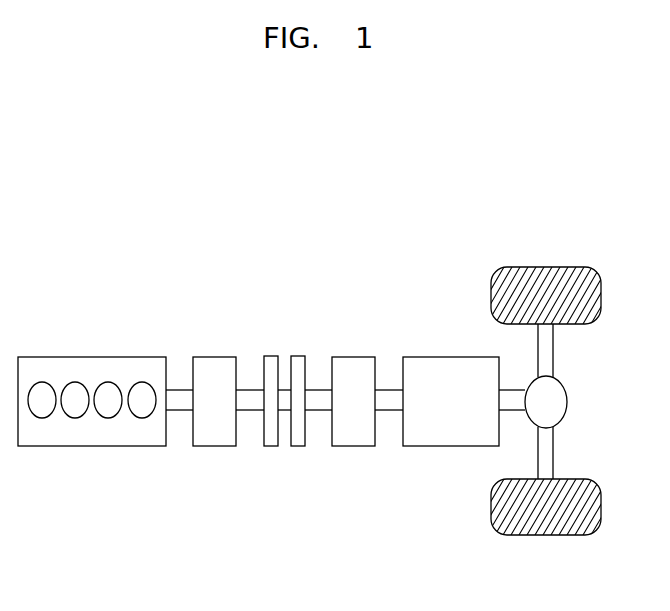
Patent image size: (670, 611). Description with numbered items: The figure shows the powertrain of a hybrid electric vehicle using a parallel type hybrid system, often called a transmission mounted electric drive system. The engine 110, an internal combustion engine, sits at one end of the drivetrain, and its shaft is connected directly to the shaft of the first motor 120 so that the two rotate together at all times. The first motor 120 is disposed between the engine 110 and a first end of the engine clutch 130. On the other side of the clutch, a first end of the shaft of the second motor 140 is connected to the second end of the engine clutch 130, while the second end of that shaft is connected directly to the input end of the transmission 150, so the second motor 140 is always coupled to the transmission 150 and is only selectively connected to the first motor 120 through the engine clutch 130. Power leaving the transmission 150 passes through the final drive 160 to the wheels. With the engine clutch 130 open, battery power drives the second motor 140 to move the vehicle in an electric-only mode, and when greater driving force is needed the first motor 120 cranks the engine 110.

The engine 110 is at (94, 357).
The first motor 120 is at (213, 357).
The engine clutch 130 is at (298, 356).
The second motor 140 is at (353, 357).
The transmission 150 is at (437, 357).
The final drive 160 is at (567, 400).